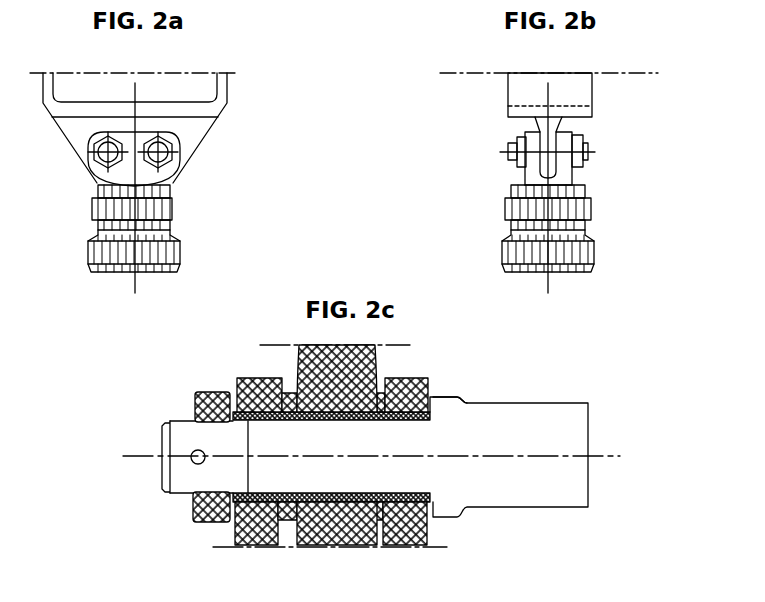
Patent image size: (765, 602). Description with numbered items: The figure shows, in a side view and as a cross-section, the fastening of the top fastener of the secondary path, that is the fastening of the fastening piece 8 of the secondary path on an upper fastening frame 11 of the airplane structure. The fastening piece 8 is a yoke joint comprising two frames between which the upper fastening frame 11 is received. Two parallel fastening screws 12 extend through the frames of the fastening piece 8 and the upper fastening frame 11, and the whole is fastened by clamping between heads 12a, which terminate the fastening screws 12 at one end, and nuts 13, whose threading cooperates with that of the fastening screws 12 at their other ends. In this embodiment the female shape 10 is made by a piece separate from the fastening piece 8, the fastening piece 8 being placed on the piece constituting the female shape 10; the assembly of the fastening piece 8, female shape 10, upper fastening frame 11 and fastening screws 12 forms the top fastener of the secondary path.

In FIG. 2a, the fastening piece 8 is at (143, 175).
In FIG. 2b, the fastening piece 8 is at (567, 176).
In FIG. 2c, the fastening piece 8 is at (252, 533).
In FIG. 2a, the female shape 10 is at (158, 250).
In FIG. 2b, the female shape 10 is at (573, 248).
In FIG. 2a, the upper fastening frame 11 is at (222, 97).
In FIG. 2b, the upper fastening frame 11 is at (547, 133).
In FIG. 2c, the upper fastening frame 11 is at (323, 533).
In FIG. 2a, the fastening screw 12 is at (163, 143).
In FIG. 2b, the fastening screw 12 is at (575, 138).
In FIG. 2c, the fastening screw 12 is at (383, 470).
In FIG. 2c, the head 12a is at (447, 408).
In FIG. 2c, the nut 13 is at (198, 512).